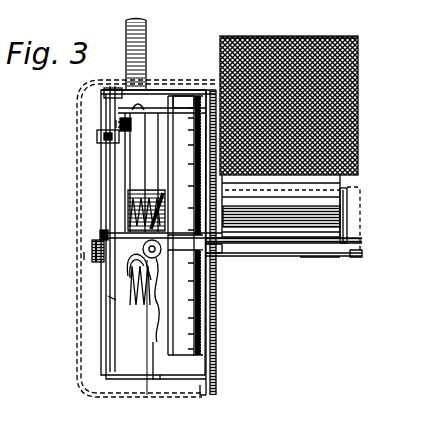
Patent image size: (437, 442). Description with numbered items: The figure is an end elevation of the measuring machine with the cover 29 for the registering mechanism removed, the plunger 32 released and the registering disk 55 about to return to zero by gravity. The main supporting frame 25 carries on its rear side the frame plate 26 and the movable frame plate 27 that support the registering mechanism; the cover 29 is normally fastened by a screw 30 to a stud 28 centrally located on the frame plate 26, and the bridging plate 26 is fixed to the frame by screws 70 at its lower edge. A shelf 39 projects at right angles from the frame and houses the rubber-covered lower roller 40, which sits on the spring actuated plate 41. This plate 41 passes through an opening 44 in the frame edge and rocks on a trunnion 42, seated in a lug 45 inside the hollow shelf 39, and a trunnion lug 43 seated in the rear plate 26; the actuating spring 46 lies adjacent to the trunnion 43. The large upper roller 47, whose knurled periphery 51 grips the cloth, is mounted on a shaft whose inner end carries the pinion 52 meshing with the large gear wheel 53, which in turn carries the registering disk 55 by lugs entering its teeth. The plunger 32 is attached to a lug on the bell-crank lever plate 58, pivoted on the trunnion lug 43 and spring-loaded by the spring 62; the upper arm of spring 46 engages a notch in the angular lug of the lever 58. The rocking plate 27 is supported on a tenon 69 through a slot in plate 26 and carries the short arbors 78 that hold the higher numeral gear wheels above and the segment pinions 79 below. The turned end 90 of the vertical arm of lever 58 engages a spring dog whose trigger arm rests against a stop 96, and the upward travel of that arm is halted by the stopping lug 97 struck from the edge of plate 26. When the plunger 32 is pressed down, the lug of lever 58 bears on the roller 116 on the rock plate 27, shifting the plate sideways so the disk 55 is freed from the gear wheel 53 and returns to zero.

The main supporting frame 25 is at (218, 356).
The frame plate 26 is at (106, 292).
The movable frame plate 27 is at (164, 378).
The stud 28 is at (96, 258).
The cover 29 is at (12, 352).
The screw 30 is at (84, 256).
The plunger 32 is at (147, 42).
The shelf 39 is at (290, 256).
The lower roller 40 is at (330, 188).
The spring actuated rotatively mounted plate 41 is at (310, 258).
The trunnion 42 is at (352, 252).
The trunnion lug 43 is at (97, 244).
The opening 44 is at (220, 255).
The lug 45 is at (316, 246).
The actuating spring 46 is at (130, 216).
The large upper roller 47 is at (358, 58).
The periphery 51 is at (318, 38).
The pinion 52 is at (208, 90).
The large gear wheel 53 is at (203, 310).
The registering disk 55 is at (182, 96).
The bell-crank lever plate 58 is at (108, 298).
The spring 62 is at (126, 326).
The tenon 69 is at (153, 380).
The screws 70 is at (203, 395).
The arbors 78 is at (108, 112).
The segment pinions 79 is at (120, 124).
The turned end 90 is at (108, 88).
The stop 96 is at (116, 123).
The stopping lug 97 is at (104, 138).
The roller 116 is at (137, 294).